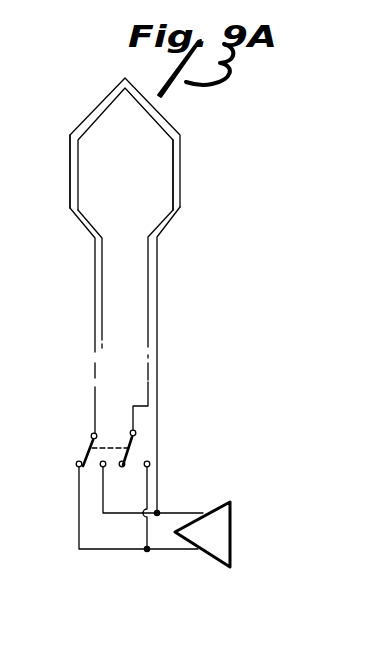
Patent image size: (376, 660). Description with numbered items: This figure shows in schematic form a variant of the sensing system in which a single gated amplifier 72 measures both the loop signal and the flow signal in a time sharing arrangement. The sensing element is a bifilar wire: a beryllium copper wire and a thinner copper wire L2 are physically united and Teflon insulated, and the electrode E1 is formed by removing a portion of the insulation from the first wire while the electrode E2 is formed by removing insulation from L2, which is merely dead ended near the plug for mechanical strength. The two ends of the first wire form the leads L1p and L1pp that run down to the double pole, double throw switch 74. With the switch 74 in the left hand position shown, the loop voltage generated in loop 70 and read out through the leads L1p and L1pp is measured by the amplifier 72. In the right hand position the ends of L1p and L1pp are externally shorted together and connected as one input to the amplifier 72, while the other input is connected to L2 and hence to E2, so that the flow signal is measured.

The loop 70 is at (78, 102).
The electrode E1 is at (68, 173).
The electrode E2 is at (175, 173).
The lead L1p is at (93, 289).
The thinner copper wire L2 is at (147, 289).
The lead L1pp is at (158, 294).
The double pole, double throw switch 74 is at (107, 447).
The gated amplifier 72 is at (218, 520).